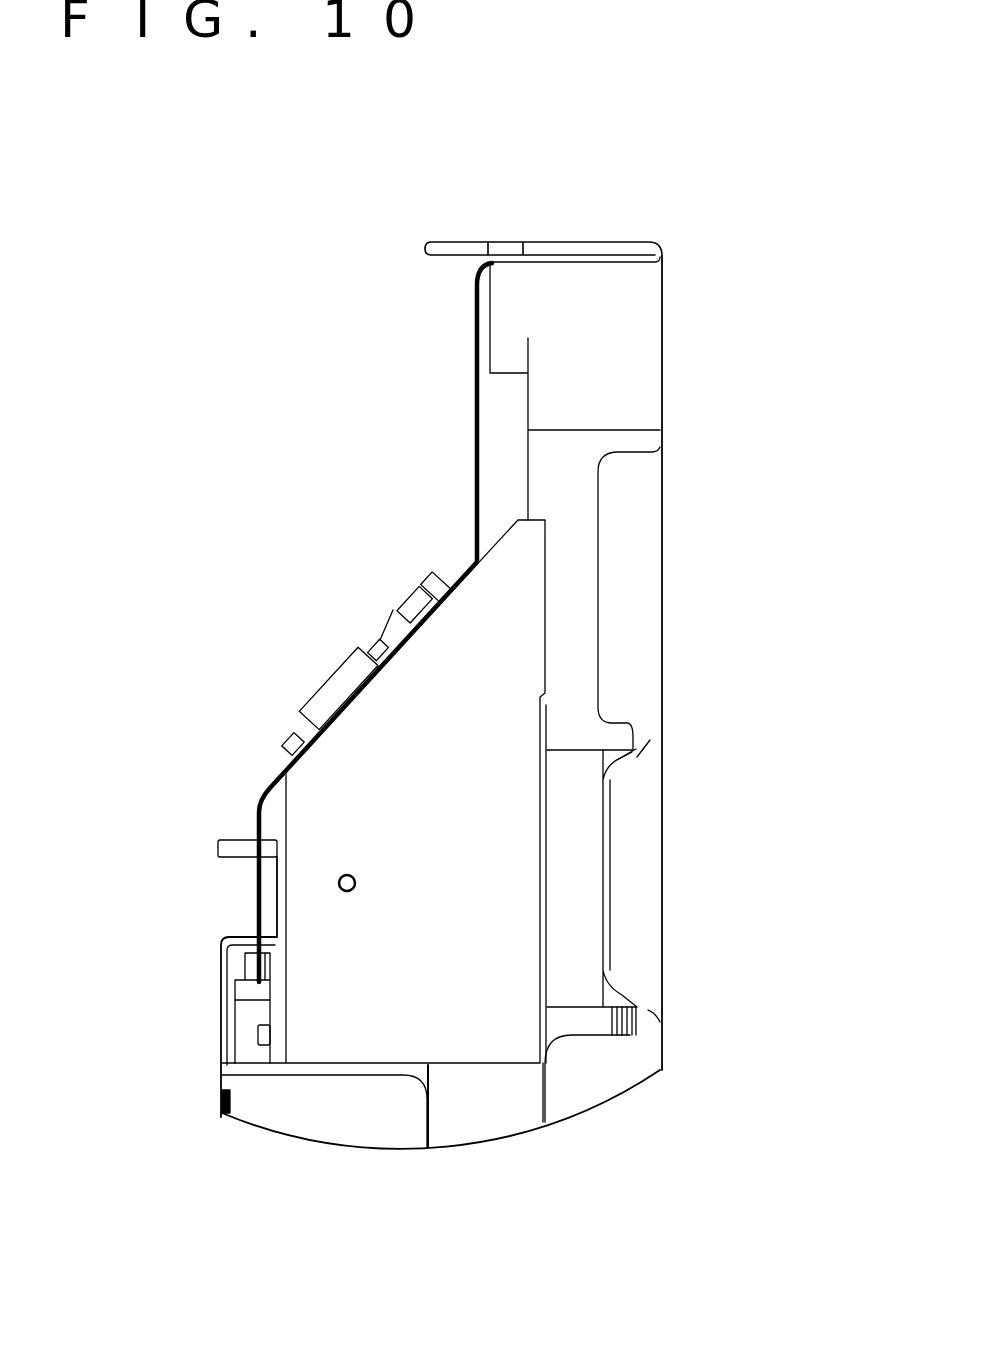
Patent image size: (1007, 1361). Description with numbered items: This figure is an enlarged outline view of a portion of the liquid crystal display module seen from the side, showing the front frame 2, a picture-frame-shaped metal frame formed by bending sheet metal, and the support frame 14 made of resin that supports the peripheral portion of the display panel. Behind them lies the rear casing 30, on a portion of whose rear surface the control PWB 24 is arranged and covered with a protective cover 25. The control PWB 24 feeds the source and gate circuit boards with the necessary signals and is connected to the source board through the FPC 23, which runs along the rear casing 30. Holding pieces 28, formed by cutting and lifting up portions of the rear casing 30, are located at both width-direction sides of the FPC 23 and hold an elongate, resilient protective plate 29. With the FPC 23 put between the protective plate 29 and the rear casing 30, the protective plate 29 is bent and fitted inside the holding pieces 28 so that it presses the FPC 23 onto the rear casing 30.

The front frame 2 is at (606, 238).
The support frame 14 is at (635, 402).
The FPC (flexible printed circuit) 23 is at (468, 452).
The control PWB 24 is at (278, 1012).
The protective cover 25 is at (368, 1128).
The holding pieces 28 is at (325, 700).
The protective plate 29 is at (382, 642).
The rear casing 30 is at (480, 1040).